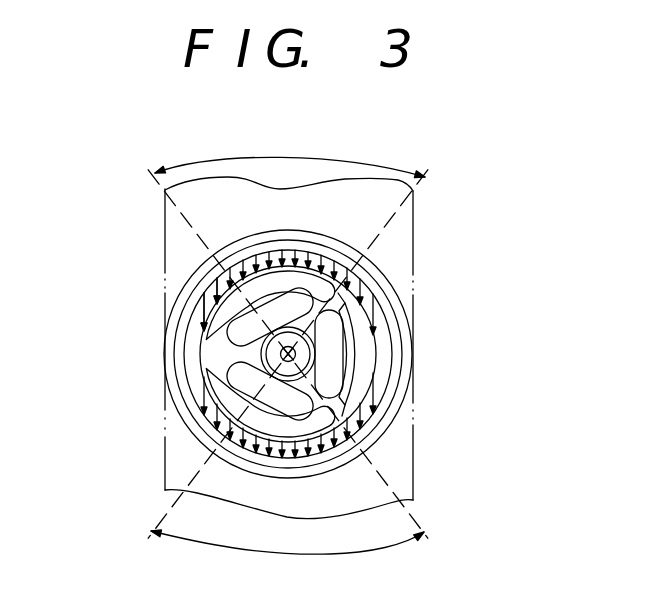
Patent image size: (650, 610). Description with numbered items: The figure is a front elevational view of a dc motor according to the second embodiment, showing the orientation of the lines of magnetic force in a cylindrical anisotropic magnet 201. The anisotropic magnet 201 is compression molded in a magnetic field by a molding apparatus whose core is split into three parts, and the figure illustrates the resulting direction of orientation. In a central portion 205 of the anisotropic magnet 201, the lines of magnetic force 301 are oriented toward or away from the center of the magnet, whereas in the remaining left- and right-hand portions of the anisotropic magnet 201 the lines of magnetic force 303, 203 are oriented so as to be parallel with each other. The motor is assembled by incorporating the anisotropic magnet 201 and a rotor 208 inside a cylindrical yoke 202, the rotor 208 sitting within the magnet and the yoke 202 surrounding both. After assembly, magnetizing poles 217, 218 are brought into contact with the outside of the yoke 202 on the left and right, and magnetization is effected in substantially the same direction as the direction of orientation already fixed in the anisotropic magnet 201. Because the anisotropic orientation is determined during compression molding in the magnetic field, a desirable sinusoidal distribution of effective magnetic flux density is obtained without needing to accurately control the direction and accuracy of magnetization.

The anisotropic magnet 201 is at (385, 341).
The cylindrical yoke 202 is at (413, 368).
The lines of magnetic force 203 is at (370, 337).
The central portion 205 is at (303, 552).
The rotor 208 is at (312, 280).
The magnetizing pole 217 is at (165, 230).
The magnetizing pole 218 is at (415, 470).
The lines of magnetic force 301 is at (303, 250).
The lines of magnetic force 303 is at (199, 310).